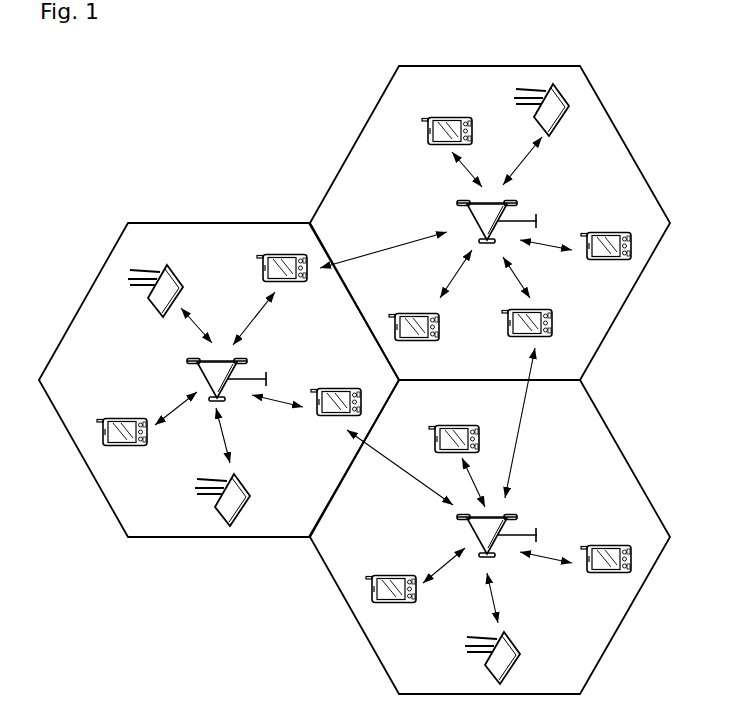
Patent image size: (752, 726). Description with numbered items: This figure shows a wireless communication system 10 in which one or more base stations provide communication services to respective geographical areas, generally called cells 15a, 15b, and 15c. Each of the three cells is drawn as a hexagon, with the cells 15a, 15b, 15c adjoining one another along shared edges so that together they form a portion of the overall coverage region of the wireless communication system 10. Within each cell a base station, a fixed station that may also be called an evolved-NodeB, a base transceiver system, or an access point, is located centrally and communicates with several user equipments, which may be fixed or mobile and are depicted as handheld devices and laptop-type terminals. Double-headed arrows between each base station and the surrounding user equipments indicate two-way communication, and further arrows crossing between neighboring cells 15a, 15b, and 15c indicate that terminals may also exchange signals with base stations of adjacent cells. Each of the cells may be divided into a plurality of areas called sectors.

The wireless communication system 10 is at (135, 158).
The cell 15a is at (209, 222).
The cell 15b is at (367, 120).
The cell 15c is at (367, 640).